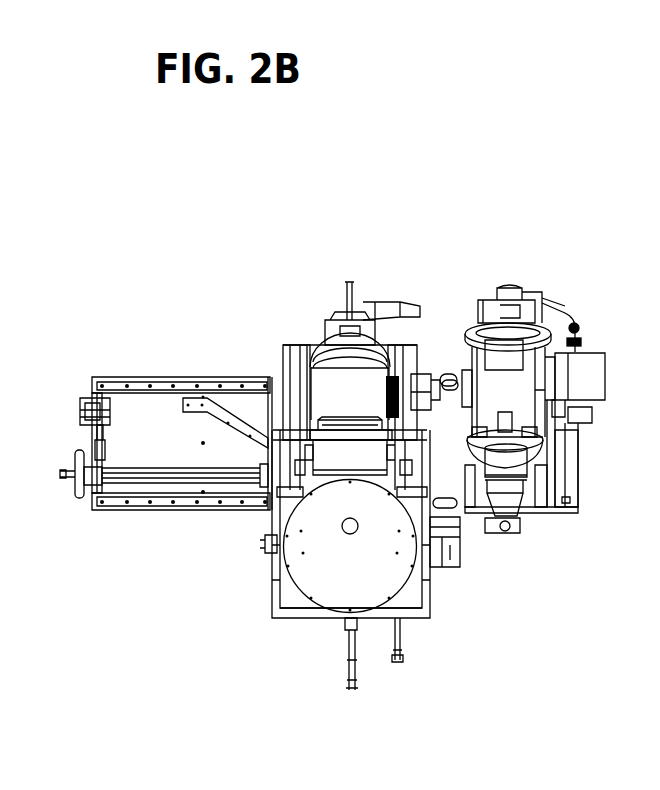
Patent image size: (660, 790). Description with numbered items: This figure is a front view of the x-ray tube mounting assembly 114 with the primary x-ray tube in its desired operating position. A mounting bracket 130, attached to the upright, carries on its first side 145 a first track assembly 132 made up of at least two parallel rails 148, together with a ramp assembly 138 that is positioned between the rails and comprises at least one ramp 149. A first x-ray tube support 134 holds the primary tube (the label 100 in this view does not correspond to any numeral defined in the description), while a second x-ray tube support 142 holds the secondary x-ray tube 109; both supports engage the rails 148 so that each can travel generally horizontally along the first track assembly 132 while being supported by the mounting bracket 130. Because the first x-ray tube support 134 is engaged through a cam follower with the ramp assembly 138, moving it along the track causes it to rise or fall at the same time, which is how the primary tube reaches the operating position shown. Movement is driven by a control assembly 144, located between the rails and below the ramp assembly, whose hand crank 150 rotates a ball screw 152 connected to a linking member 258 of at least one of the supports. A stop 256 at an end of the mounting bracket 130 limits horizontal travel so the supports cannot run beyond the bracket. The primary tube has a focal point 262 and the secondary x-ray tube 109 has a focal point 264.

The x-ray tube mounting assembly 114 is at (486, 218).
The secondary x-ray tube 109 is at (522, 388).
The first x-ray tube support 134 is at (421, 364).
The first chamber 100 is at (342, 380).
The ramp 149 is at (258, 400).
The ramp assembly 138 is at (244, 395).
The rails 148 is at (195, 380).
The first side 145 is at (158, 420).
The mounting bracket 130 is at (138, 413).
The stop 256 is at (80, 404).
The control assembly 144 is at (73, 493).
The hand crank 150 is at (80, 506).
The ball screw 152 is at (168, 480).
The first track assembly 132 is at (207, 512).
The linking member 258 is at (260, 498).
The focal point 262 is at (353, 535).
The focal point 264 is at (507, 535).
The second x-ray tube support 142 is at (572, 480).